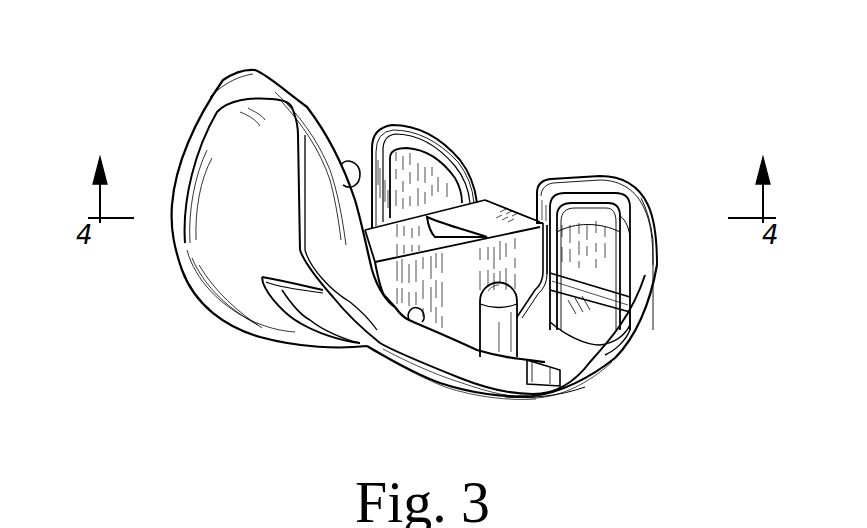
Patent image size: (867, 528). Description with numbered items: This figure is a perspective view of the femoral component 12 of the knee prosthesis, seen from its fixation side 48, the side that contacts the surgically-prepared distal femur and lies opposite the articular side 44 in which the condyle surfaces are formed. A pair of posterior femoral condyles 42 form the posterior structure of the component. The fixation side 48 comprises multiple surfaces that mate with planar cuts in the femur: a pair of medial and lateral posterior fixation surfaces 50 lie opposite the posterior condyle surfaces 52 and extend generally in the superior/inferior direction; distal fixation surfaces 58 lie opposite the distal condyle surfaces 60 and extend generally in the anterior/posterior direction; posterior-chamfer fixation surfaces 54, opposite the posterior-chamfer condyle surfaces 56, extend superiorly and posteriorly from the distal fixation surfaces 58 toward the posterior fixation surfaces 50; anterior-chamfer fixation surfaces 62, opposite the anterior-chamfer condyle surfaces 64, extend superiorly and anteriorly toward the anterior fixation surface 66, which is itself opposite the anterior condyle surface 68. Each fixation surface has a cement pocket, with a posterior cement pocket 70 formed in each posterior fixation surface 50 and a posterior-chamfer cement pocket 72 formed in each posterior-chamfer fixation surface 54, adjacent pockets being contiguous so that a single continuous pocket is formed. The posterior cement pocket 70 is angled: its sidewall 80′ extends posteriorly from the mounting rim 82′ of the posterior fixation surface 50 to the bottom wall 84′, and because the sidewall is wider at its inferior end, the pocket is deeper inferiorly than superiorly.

The femoral component 12 is at (645, 105).
The posterior femoral condyles 42 is at (420, 140).
The articular side 44 is at (457, 388).
The fixation side 48 is at (580, 190).
The posterior fixation surfaces 50 is at (383, 140).
The posterior condyle surfaces 52 is at (480, 198).
The posterior-chamfer fixation surfaces 54 is at (597, 338).
The posterior-chamfer condyle surfaces 56 is at (633, 342).
The distal fixation surfaces 58 is at (570, 365).
The distal condyle surfaces 60 is at (520, 393).
The anterior-chamfer fixation surfaces 62 is at (413, 324).
The anterior-chamfer condyle surfaces 64 is at (367, 350).
The anterior fixation surface 66 is at (343, 186).
The anterior condyle surface 68 is at (303, 210).
The posterior cement pocket 70 is at (422, 168).
The posterior-chamfer cement pocket 72 is at (590, 320).
The sidewall 80′ is at (626, 226).
The mounting rim 82′ is at (553, 193).
The bottom wall 84′ is at (588, 213).